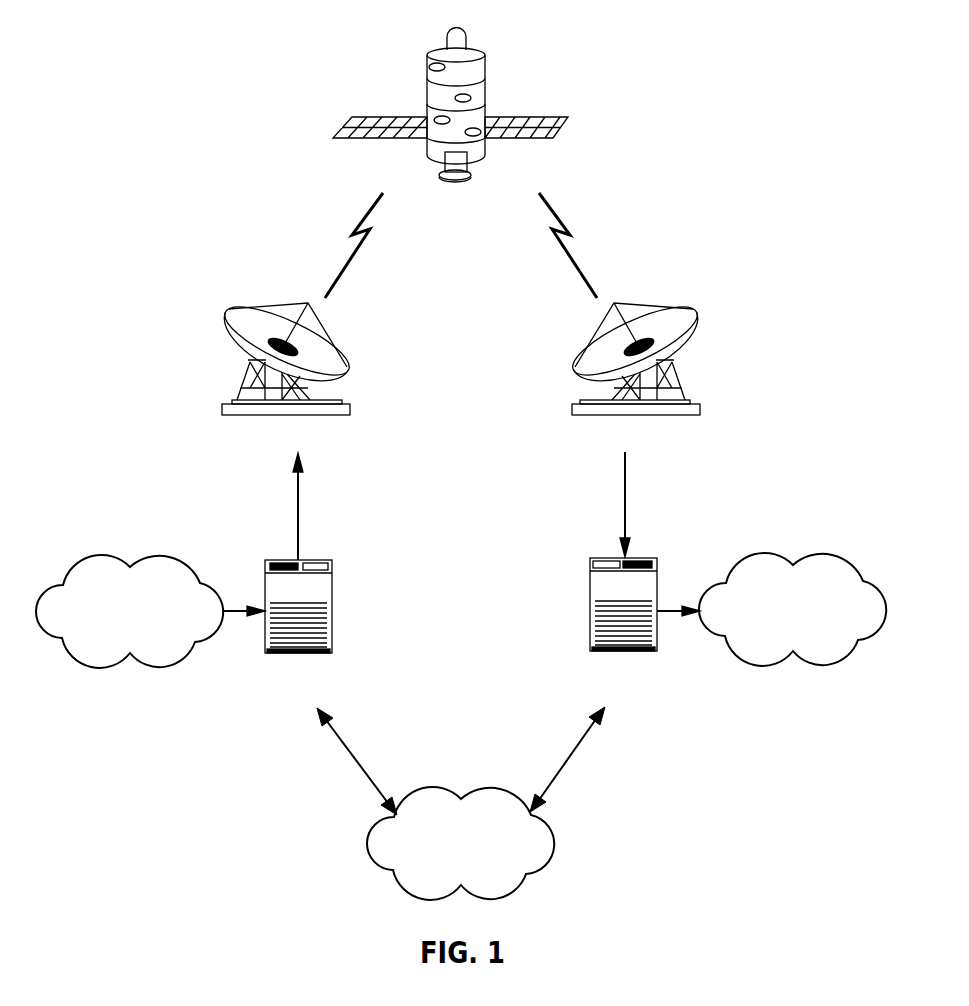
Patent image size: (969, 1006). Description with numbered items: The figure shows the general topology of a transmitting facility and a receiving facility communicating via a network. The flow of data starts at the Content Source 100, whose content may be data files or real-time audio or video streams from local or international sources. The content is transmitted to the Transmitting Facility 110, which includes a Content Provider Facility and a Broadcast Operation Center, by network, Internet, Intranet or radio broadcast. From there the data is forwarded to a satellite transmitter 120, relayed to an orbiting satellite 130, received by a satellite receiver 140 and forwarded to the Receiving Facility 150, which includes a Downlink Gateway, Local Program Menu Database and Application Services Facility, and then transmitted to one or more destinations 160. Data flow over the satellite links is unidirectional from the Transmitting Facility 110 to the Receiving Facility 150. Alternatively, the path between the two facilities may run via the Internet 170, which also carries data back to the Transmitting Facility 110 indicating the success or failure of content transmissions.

The Content Source 100 is at (100, 553).
The Transmitting Facility 110 is at (265, 560).
The satellite transmitter 120 is at (226, 312).
The orbiting satellite 130 is at (466, 36).
The satellite receiver 140 is at (697, 306).
The Receiving Facility 150 is at (653, 558).
The destinations 160 is at (827, 553).
The Internet 170 is at (553, 842).